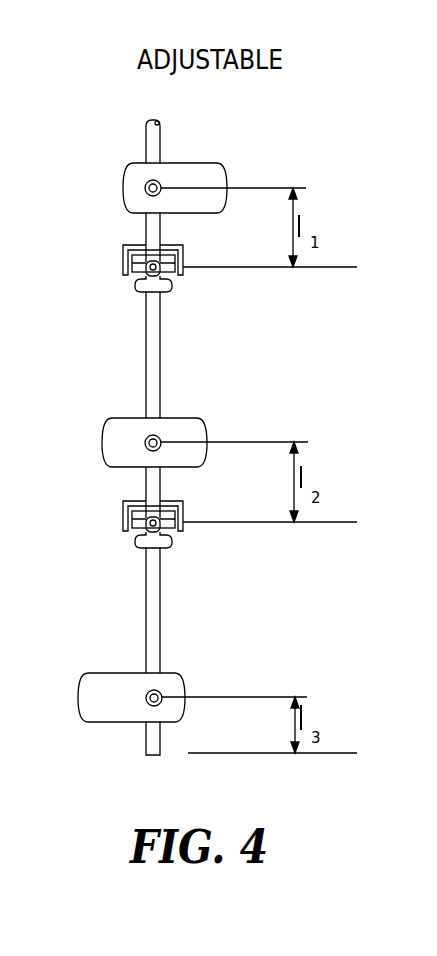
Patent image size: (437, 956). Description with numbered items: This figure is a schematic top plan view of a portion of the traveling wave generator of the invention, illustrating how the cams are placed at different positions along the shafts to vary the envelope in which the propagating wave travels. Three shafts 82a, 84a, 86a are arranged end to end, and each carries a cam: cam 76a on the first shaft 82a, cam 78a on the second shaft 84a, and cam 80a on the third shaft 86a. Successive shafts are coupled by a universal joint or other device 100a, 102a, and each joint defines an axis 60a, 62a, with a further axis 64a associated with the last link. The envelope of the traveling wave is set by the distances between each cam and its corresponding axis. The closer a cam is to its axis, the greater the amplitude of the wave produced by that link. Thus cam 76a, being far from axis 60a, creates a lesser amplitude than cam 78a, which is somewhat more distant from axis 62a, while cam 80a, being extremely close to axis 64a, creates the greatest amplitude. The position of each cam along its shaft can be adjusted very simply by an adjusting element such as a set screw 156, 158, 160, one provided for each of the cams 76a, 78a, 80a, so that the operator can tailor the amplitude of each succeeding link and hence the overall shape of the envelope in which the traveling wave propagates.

The cam 76a is at (215, 163).
The cam 78a is at (196, 420).
The cam 80a is at (178, 675).
The shaft 82a is at (146, 137).
The shaft 84a is at (146, 358).
The shaft 86a is at (146, 600).
The set screw 156 is at (145, 188).
The set screw 158 is at (145, 443).
The set screw 160 is at (146, 698).
The universal joint 100a is at (185, 293).
The universal joint 102a is at (178, 540).
The axis 60a is at (343, 267).
The axis 62a is at (340, 522).
The axis 64a is at (347, 753).